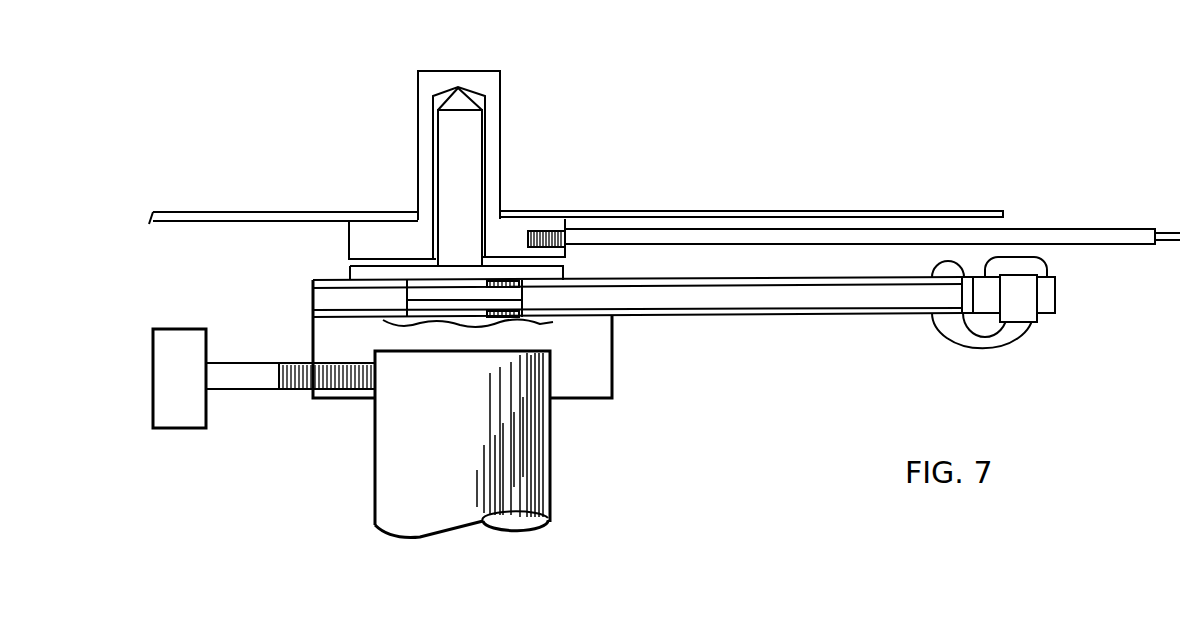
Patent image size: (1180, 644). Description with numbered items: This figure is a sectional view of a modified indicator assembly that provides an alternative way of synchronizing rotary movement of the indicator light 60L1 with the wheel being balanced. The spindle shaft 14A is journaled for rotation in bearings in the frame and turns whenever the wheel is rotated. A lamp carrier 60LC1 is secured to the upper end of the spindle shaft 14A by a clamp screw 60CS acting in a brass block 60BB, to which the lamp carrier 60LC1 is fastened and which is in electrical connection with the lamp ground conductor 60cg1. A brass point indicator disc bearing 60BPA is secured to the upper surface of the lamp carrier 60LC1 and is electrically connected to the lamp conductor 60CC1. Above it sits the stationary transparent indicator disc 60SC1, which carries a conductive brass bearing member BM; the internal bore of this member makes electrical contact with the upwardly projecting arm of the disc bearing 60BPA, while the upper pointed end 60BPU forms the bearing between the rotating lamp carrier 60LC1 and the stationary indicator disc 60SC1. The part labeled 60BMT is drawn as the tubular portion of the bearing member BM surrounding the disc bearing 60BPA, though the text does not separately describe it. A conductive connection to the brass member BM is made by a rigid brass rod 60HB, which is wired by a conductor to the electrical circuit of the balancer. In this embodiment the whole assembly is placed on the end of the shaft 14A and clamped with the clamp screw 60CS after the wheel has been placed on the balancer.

The conductive brass bearing member BM is at (482, 162).
The bearing mount tube 60BMT is at (430, 175).
The brass point indicator disc bearing 60BPA is at (460, 227).
The upper pointed end 60BPU is at (453, 91).
The stationary transparent indicator disc 60SC1 is at (685, 208).
The rigid brass rod 60HB is at (777, 242).
The lamp carrier 60LC1 is at (773, 295).
The lamp ground conductor 60cg1 is at (647, 307).
The lamp conductor 60CC1 is at (858, 277).
The indicator light 60L1 is at (1028, 267).
The brass block 60BB is at (600, 372).
The spindle shaft 14A is at (520, 495).
The clamp screw 60CS is at (170, 403).